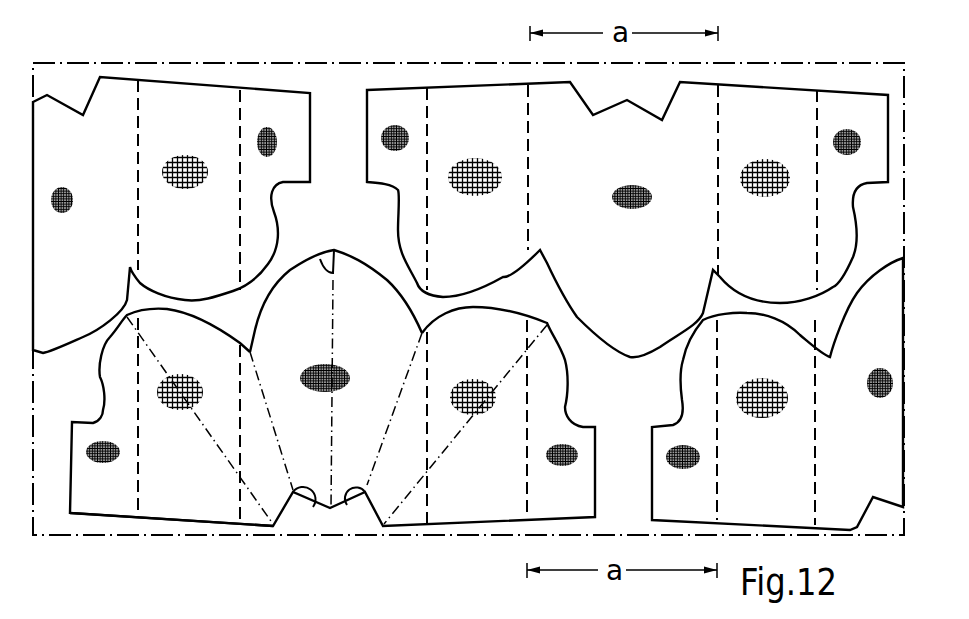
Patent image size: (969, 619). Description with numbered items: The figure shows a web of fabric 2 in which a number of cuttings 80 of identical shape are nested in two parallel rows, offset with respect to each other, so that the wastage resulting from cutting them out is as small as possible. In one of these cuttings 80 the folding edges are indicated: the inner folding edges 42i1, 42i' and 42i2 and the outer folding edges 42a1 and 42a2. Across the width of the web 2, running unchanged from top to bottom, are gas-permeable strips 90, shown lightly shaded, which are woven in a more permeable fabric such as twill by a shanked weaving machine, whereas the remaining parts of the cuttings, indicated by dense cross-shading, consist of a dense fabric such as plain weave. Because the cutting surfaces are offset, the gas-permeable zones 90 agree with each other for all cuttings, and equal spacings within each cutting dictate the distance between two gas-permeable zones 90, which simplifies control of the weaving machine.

The web of fabric 2 is at (265, 78).
The gas-permeable strip 90 is at (166, 92).
The cutting 80 is at (110, 518).
The inner folding edge 42i' is at (336, 347).
The inner folding edge 42i1 is at (219, 517).
The inner folding edge 42i2 is at (417, 517).
The outer folding edge 42a1 is at (313, 518).
The outer folding edge 42a2 is at (343, 517).